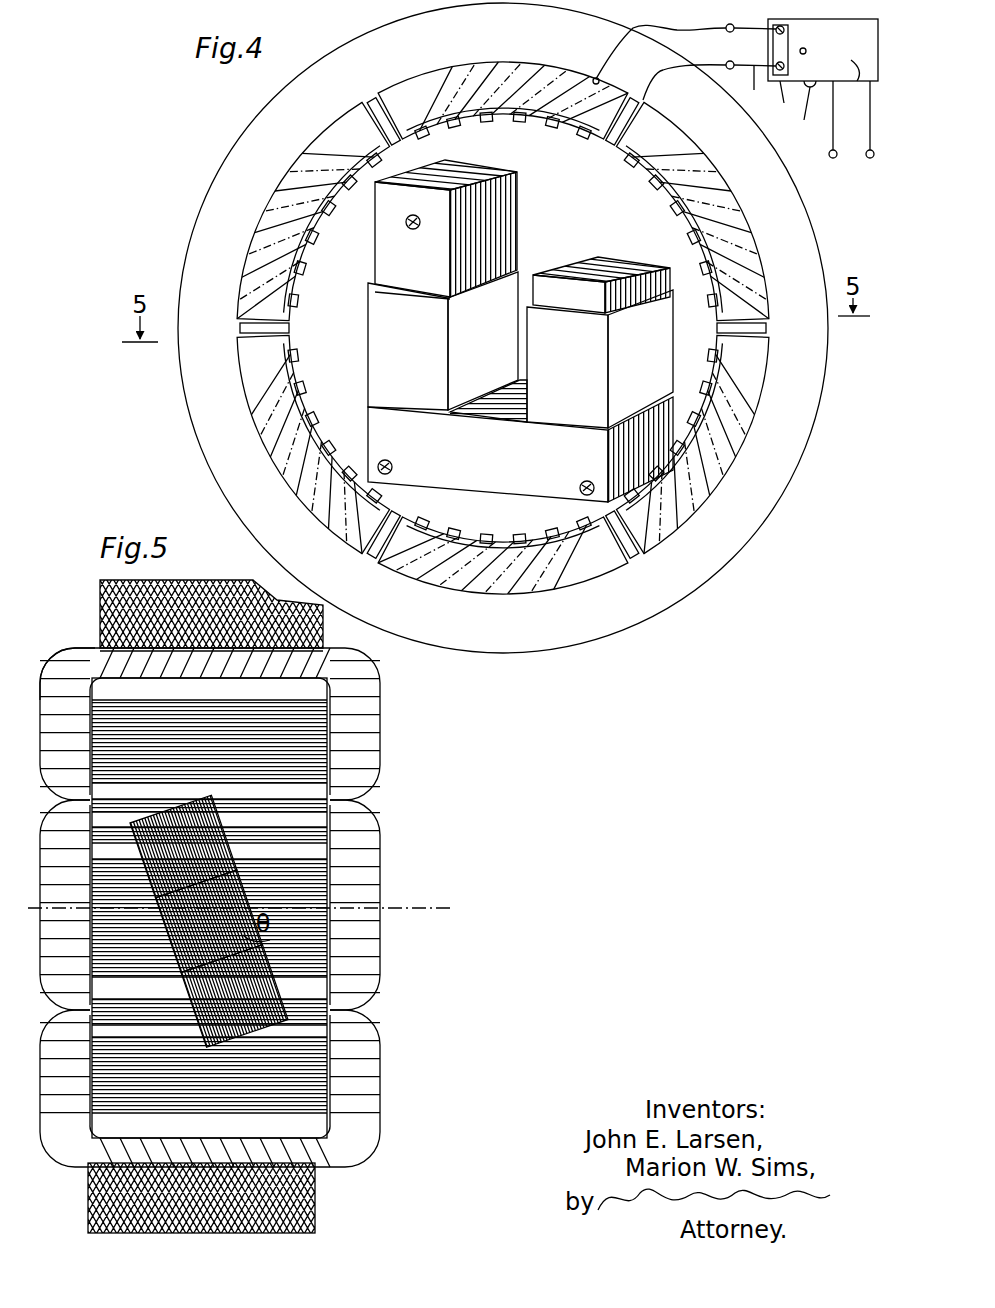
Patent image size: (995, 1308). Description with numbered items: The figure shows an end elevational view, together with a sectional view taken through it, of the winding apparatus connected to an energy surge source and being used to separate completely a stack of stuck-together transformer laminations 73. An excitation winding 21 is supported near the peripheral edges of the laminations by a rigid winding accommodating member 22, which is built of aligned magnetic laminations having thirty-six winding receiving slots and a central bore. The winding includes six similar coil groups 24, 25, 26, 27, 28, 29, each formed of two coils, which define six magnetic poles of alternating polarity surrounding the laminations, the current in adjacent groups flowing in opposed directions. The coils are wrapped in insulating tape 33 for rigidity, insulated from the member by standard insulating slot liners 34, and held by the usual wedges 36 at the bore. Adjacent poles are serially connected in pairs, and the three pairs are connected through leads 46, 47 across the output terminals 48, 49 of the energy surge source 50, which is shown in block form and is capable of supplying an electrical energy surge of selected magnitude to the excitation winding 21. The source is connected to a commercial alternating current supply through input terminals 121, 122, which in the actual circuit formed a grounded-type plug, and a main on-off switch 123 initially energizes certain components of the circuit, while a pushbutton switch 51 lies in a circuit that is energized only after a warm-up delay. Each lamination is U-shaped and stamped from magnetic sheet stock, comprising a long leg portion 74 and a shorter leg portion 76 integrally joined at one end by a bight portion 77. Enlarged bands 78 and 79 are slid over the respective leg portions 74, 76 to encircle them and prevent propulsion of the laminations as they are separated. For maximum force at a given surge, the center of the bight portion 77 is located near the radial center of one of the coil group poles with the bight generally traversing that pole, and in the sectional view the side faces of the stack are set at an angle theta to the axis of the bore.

In FIG. 4, the excitation winding 21 is at (604, 80).
In FIG. 4, the winding accommodating member 22 is at (195, 238).
In FIG. 5, the winding accommodating member 22 is at (100, 598).
In FIG. 4, the coil group 24 is at (472, 68).
In FIG. 4, the coil group 25 is at (724, 187).
In FIG. 4, the coil group 26 is at (269, 204).
In FIG. 4, the coil group 27 is at (291, 491).
In FIG. 5, the coil group 27 is at (381, 743).
In FIG. 4, the coil group 28 is at (513, 597).
In FIG. 5, the coil group 28 is at (380, 960).
In FIG. 4, the coil group 29 is at (750, 438).
In FIG. 5, the coil group 29 is at (376, 1088).
In FIG. 5, the insulating tape 33 is at (58, 662).
In FIG. 5, the insulating slot liner 34 is at (336, 651).
In FIG. 5, the wedge 36 is at (331, 853).
In FIG. 4, the lead 46 is at (727, 33).
In FIG. 4, the lead 47 is at (751, 90).
In FIG. 4, the output terminal 48 is at (774, 33).
In FIG. 4, the output terminal 49 is at (783, 97).
In FIG. 4, the energy surge source 50 is at (823, 73).
In FIG. 4, the pushbutton switch 51 is at (806, 49).
In FIG. 4, the transformer laminations 73 is at (482, 168).
In FIG. 5, the transformer laminations 73 is at (208, 863).
In FIG. 4, the long leg portion 74 is at (392, 243).
In FIG. 4, the shorter leg portion 76 is at (563, 298).
In FIG. 4, the bight portion 77 is at (515, 488).
In FIG. 4, the enlarged band 78 is at (443, 341).
In FIG. 5, the enlarged band 78 is at (200, 830).
In FIG. 4, the enlarged band 79 is at (600, 359).
In FIG. 5, the enlarged band 79 is at (250, 956).
In FIG. 4, the input terminal 121 is at (830, 142).
In FIG. 4, the input terminal 122 is at (866, 160).
In FIG. 4, the main on-off switch 123 is at (798, 114).